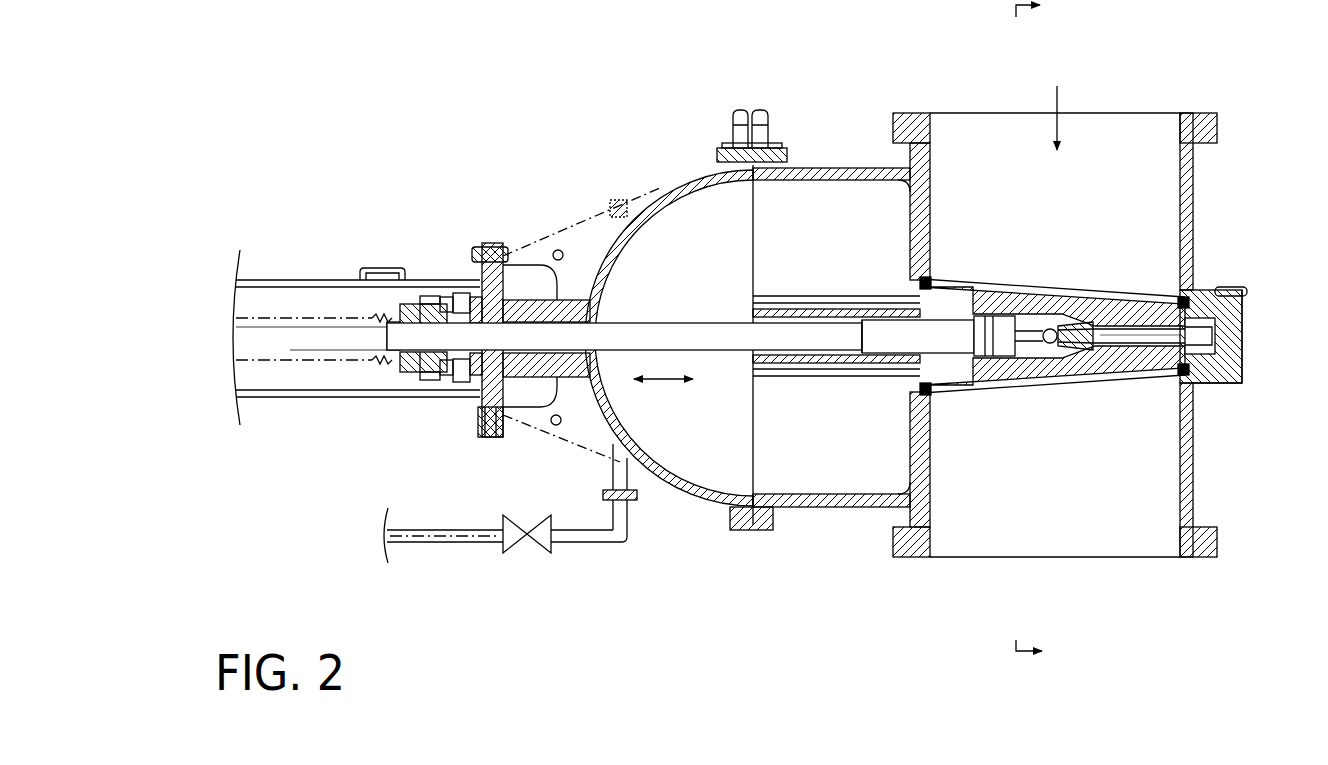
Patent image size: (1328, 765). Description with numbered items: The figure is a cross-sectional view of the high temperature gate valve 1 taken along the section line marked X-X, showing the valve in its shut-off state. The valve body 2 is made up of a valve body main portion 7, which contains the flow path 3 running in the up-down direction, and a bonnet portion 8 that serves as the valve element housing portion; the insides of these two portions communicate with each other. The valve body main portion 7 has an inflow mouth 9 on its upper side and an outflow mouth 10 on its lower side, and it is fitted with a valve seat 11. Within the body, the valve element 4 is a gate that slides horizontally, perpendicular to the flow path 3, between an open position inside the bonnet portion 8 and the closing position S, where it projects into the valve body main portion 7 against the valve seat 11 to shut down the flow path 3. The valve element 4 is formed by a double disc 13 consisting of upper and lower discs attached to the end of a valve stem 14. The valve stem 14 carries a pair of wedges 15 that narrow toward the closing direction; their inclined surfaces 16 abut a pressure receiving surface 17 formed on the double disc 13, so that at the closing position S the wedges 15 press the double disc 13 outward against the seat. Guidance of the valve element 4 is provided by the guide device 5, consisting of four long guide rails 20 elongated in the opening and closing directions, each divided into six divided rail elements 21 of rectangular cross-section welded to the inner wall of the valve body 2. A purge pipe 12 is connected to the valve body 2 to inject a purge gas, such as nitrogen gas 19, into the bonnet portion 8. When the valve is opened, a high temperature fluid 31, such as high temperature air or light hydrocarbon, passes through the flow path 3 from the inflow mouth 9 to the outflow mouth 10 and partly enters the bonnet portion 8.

The high temperature gate valve 1 is at (571, 150).
The valve body 2 is at (1208, 220).
The flow path 3 is at (991, 161).
The valve element 4 is at (1000, 385).
The guide device 5 is at (741, 311).
The valve body main portion 7 is at (1196, 470).
The bonnet portion 8 is at (830, 507).
The inflow mouth 9 is at (1104, 142).
The outflow mouth 10 is at (1136, 540).
The valve seat 11 is at (1168, 292).
The purge pipe 12 is at (443, 535).
The double disc 13 is at (950, 283).
The valve stem 14 is at (622, 322).
The wedges 15 is at (1020, 292).
The inclined surfaces 16 is at (1064, 306).
The pressure receiving surface 17 is at (1082, 305).
The nitrogen gas 19 is at (648, 400).
The guide rails 20 is at (772, 307).
The divided rail elements 21 is at (832, 309).
The high temperature fluid 31 is at (1043, 130).
The closing position S is at (1122, 398).